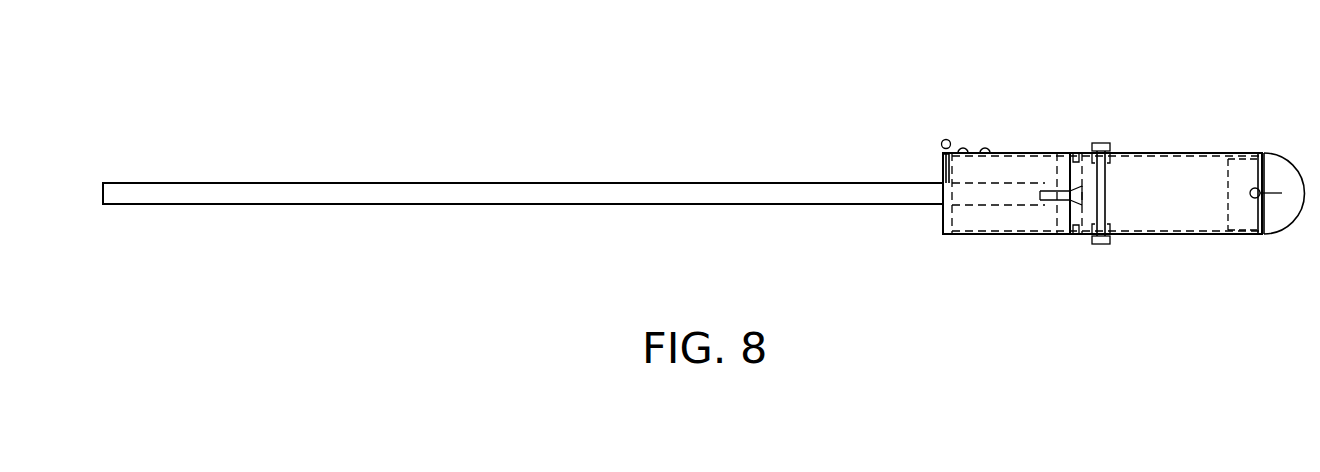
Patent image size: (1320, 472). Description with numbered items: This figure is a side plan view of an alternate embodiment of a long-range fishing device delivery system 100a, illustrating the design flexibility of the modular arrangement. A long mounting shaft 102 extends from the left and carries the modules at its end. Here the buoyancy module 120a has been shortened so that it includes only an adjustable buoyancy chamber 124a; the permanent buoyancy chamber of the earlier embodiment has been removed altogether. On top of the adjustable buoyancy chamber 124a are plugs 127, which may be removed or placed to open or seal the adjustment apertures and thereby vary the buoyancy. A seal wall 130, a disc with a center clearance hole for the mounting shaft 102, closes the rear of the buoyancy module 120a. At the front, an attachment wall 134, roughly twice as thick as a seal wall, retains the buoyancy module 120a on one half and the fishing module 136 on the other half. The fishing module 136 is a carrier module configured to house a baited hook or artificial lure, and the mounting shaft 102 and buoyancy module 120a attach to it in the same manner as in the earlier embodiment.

The long-range fishing device delivery system 100a is at (455, 133).
The mounting shaft 102 is at (418, 206).
The buoyancy module 120a is at (998, 242).
The adjustable buoyancy chamber 124a is at (1018, 180).
The plugs 127 is at (968, 150).
The seal wall 130 is at (940, 221).
The attachment wall 134 is at (1066, 219).
The fishing module 136 is at (1176, 140).